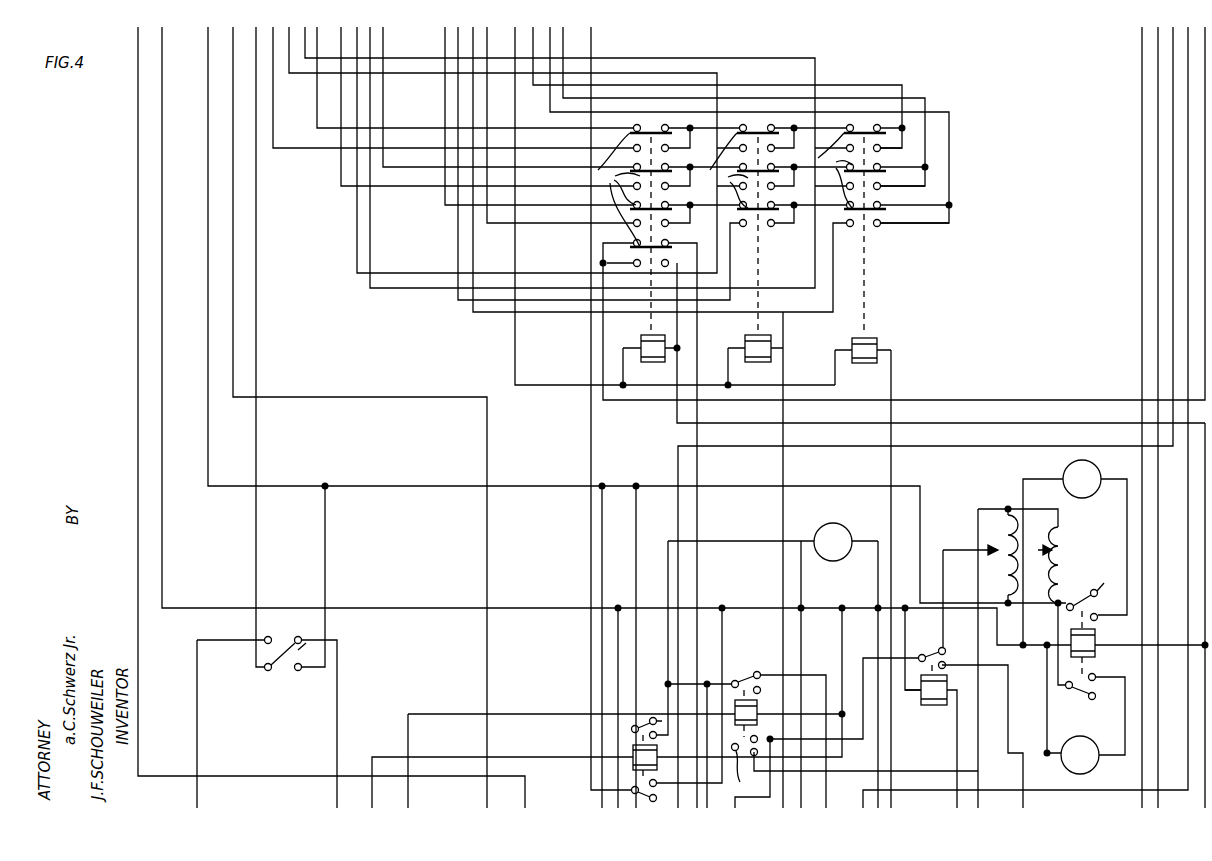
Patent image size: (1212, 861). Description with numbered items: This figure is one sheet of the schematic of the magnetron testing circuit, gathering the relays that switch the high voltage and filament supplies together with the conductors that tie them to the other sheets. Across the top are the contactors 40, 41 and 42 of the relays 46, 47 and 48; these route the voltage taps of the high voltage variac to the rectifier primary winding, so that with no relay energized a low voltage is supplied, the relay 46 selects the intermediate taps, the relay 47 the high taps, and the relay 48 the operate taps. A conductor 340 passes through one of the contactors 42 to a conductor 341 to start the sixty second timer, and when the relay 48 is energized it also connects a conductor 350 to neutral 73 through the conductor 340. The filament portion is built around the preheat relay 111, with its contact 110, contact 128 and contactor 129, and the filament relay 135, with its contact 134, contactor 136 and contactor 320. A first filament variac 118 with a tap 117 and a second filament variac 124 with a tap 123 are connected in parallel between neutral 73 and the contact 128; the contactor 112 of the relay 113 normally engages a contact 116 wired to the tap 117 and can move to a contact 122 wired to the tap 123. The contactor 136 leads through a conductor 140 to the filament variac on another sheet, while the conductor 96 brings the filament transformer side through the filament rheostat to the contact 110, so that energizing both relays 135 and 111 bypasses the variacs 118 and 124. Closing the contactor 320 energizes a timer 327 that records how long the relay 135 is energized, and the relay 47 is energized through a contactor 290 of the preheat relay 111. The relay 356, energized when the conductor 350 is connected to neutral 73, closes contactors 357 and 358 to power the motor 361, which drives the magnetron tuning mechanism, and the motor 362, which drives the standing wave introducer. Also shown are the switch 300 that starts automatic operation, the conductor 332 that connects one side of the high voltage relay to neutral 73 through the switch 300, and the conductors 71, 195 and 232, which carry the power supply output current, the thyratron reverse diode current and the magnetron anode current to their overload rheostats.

The conductor 140 is at (591, 45).
The conductor 195 is at (1142, 64).
The conductor 232 is at (1158, 82).
The conductor 71 is at (1173, 99).
The conductor 96 is at (1188, 118).
The conductor 340 is at (1205, 141).
The ground or neutral 73 is at (208, 258).
The conductor 332 is at (258, 281).
The conductor 350 is at (1205, 802).
The conductor 341 is at (697, 353).
The contactors 42 is at (666, 228).
The contactors 41 is at (775, 228).
The contactors 40 is at (880, 230).
The relay 48 is at (651, 362).
The relay 47 is at (758, 356).
The relay 46 is at (864, 360).
The motor 361 is at (1063, 470).
The timer 327 is at (838, 510).
The motor 362 is at (1063, 742).
The first filament variac 118 is at (1006, 508).
The tap 117 is at (988, 549).
The tap 123 is at (1050, 548).
The second filament variac 124 is at (1052, 551).
The contactor 357 is at (1088, 595).
The relay 356 is at (1095, 645).
The contactor 358 is at (1095, 677).
The contactor 112 is at (921, 654).
The contact 116 is at (943, 647).
The contact 122 is at (921, 695).
The relay 113 is at (918, 712).
The preheat relay 111 is at (757, 712).
The contactor 290 is at (748, 680).
The contact 110 is at (780, 739).
The contact 128 is at (758, 752).
The contactor 129 is at (751, 770).
The contactor 320 is at (631, 729).
The filament relay 135 is at (633, 749).
The contact 134 is at (649, 783).
The contactor 136 is at (650, 798).
The switch 300 is at (280, 670).